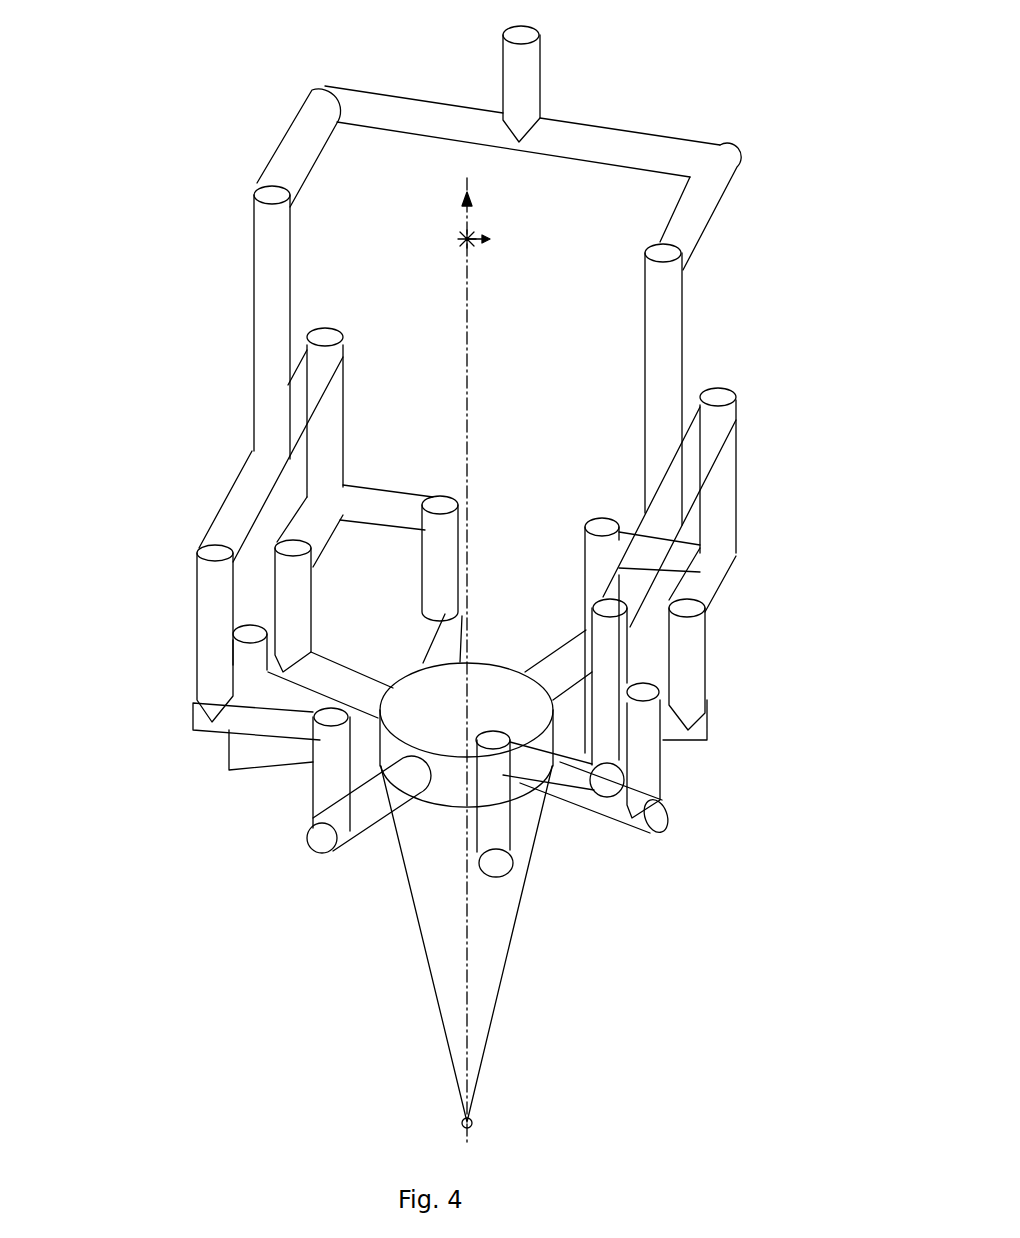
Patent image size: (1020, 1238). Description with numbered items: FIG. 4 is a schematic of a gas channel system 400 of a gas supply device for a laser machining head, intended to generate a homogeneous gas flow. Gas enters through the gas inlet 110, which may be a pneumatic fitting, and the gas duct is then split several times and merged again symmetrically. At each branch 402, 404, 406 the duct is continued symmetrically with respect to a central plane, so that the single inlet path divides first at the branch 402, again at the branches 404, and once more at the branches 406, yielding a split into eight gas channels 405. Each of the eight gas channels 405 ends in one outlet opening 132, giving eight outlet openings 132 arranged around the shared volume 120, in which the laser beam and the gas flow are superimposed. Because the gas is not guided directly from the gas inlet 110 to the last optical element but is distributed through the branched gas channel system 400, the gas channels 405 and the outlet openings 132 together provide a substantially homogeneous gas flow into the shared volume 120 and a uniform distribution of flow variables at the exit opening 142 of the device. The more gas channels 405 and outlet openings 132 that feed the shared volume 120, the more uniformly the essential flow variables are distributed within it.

The gas channel system 400 is at (142, 77).
The gas inlet 110 is at (530, 70).
The branch 402 is at (522, 125).
The branch 404 is at (290, 458).
The gas channels 405 is at (613, 817).
The branch 406 is at (340, 485).
The outlet openings 132 is at (418, 805).
The shared volume 120 is at (487, 1030).
The exit opening 142 is at (478, 1120).